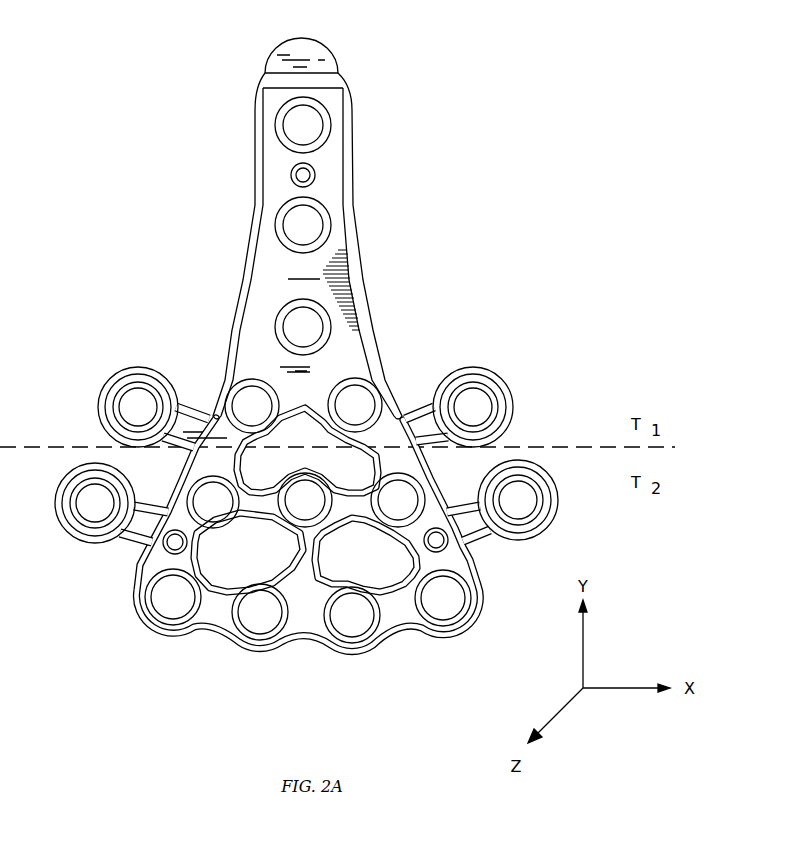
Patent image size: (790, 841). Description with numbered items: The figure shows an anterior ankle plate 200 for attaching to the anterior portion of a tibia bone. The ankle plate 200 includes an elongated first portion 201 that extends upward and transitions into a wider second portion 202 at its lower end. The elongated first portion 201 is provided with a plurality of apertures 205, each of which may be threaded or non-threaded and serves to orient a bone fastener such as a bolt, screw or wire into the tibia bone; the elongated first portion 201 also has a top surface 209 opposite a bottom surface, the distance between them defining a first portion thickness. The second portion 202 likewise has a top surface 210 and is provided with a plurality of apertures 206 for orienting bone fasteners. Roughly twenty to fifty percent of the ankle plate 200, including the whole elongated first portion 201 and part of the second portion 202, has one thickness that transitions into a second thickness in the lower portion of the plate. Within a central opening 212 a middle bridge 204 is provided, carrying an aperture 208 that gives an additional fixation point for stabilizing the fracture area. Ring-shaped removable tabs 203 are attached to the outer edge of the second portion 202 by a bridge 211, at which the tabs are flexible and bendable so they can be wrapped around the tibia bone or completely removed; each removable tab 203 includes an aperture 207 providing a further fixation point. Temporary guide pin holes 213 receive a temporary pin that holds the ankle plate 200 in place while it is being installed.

The ankle plate 200 is at (163, 49).
The elongated first portion 201 is at (367, 38).
The second portion 202 is at (483, 648).
The removable tabs 203 is at (116, 382).
The middle bridge 204 is at (275, 543).
The apertures 205 is at (298, 125).
The apertures 206 is at (250, 397).
The apertures 207 is at (485, 418).
The aperture 208 is at (328, 541).
The top surface 209 is at (326, 160).
The top surface 210 is at (408, 415).
The bridge 211 is at (150, 418).
The central opening 212 is at (192, 470).
The temporary guide pin holes 213 is at (302, 175).